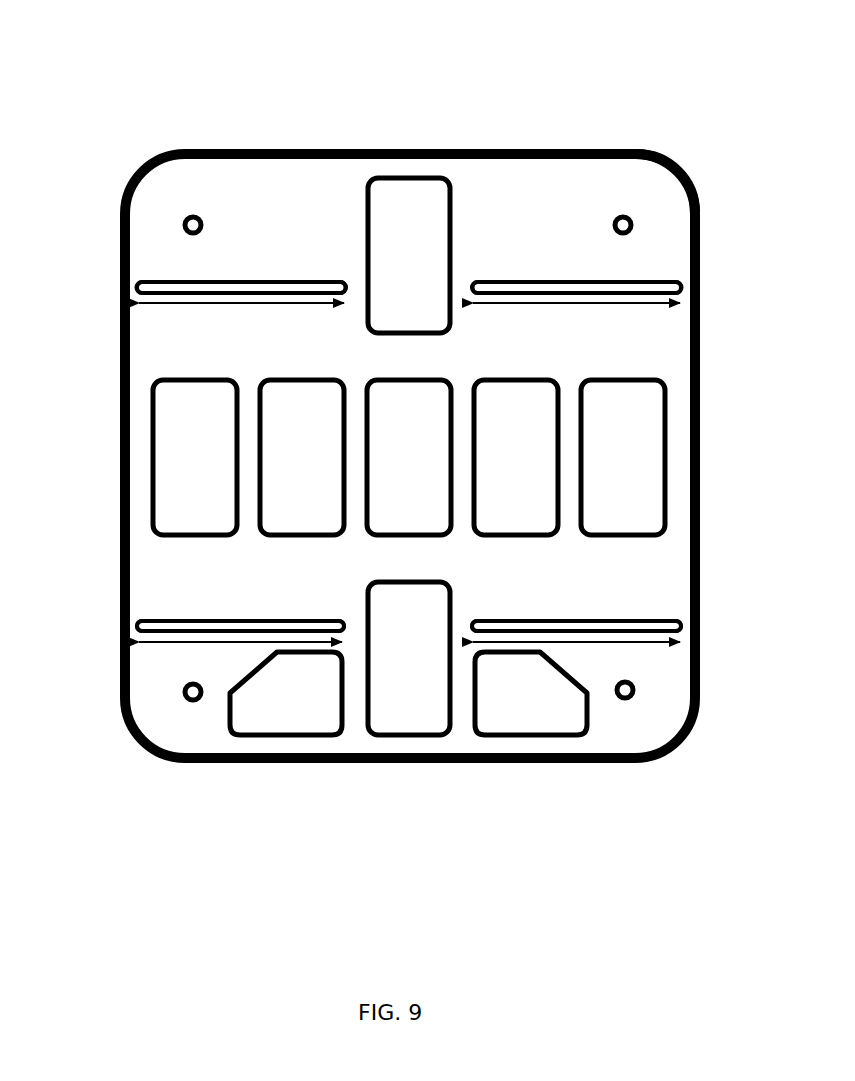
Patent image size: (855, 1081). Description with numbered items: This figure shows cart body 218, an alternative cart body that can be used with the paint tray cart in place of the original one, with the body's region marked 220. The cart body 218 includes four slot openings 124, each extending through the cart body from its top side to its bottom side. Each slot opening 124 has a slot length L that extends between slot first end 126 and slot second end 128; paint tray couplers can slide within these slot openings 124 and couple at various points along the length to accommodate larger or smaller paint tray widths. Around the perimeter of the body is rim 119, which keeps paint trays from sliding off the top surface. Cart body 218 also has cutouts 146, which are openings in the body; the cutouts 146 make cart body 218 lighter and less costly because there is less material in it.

The cart body 218 is at (628, 88).
The plate body 220 is at (427, 568).
The rim 119 is at (697, 232).
The slot opening 124 is at (237, 285).
The slot second end 128 is at (332, 285).
The slot first end 126 is at (133, 282).
The cutout 146 is at (400, 188).